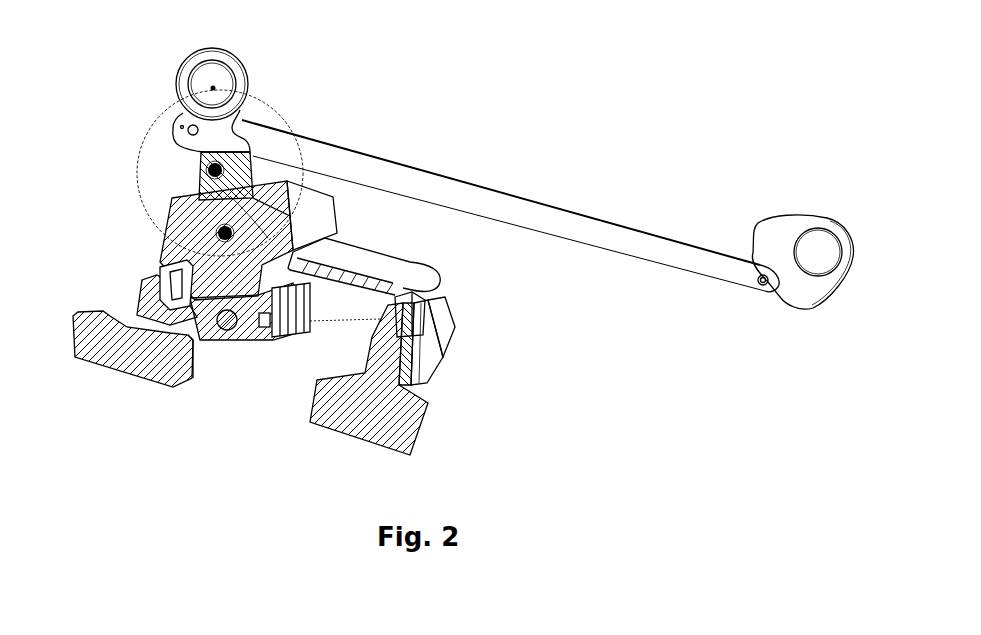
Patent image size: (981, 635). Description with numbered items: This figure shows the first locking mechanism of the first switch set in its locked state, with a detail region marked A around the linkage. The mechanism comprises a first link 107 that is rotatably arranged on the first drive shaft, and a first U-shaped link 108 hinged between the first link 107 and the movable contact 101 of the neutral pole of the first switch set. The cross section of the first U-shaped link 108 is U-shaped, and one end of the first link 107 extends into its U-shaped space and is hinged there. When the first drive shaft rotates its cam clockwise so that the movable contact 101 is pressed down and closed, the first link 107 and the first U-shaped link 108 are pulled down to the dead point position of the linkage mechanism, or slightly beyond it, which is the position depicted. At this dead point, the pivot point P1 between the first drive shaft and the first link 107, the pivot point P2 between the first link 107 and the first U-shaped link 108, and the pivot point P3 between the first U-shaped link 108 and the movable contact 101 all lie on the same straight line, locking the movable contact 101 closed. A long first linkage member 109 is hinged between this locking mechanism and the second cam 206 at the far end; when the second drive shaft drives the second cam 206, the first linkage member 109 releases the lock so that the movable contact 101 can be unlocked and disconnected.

The movable contact 101 is at (326, 213).
The first link 107 is at (242, 82).
The first U-shaped link 108 is at (240, 168).
The first linkage member 109 is at (552, 215).
The second cam 206 is at (782, 232).
The detail region A is at (173, 153).
The pivot point P1 is at (213, 88).
The pivot point P2 is at (214, 170).
The pivot point P3 is at (224, 233).